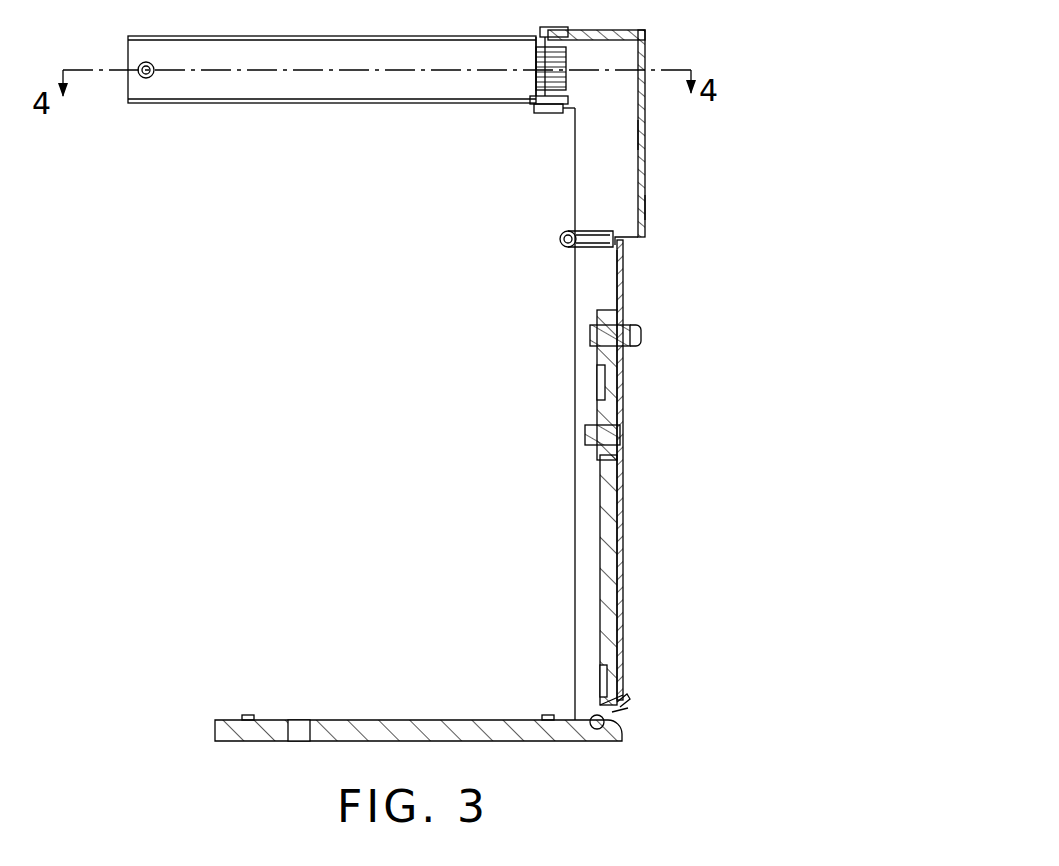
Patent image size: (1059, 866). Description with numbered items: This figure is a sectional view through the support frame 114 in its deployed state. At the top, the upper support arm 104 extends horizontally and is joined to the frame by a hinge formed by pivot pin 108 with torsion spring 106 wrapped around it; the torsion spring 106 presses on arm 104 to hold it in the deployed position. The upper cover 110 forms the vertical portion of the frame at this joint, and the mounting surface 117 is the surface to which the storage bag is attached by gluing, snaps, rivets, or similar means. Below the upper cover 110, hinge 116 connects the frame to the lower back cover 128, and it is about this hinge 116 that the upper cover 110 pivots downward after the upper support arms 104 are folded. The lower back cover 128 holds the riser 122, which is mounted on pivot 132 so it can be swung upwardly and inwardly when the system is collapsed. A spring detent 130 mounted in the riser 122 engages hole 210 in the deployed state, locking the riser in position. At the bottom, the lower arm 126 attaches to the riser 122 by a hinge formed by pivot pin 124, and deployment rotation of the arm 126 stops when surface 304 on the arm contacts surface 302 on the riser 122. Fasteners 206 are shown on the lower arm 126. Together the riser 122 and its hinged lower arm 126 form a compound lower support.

The upper support arm 104 is at (332, 112).
The torsion spring 106 is at (560, 58).
The pivot pin 108 is at (560, 102).
The upper cover 110 is at (667, 137).
The support frame 114 is at (650, 205).
The hinge 116 is at (565, 246).
The mounting surface 117 is at (634, 130).
The riser 122 is at (676, 414).
The pivot pin 124 is at (671, 763).
The lower arm 126 is at (418, 664).
The lower back cover 128 is at (696, 300).
The spring detent 130 is at (513, 385).
The pivot 132 is at (590, 340).
The fastener 206 is at (345, 650).
The hole 210 is at (612, 440).
The surface 302 is at (627, 711).
The surface 304 is at (627, 698).